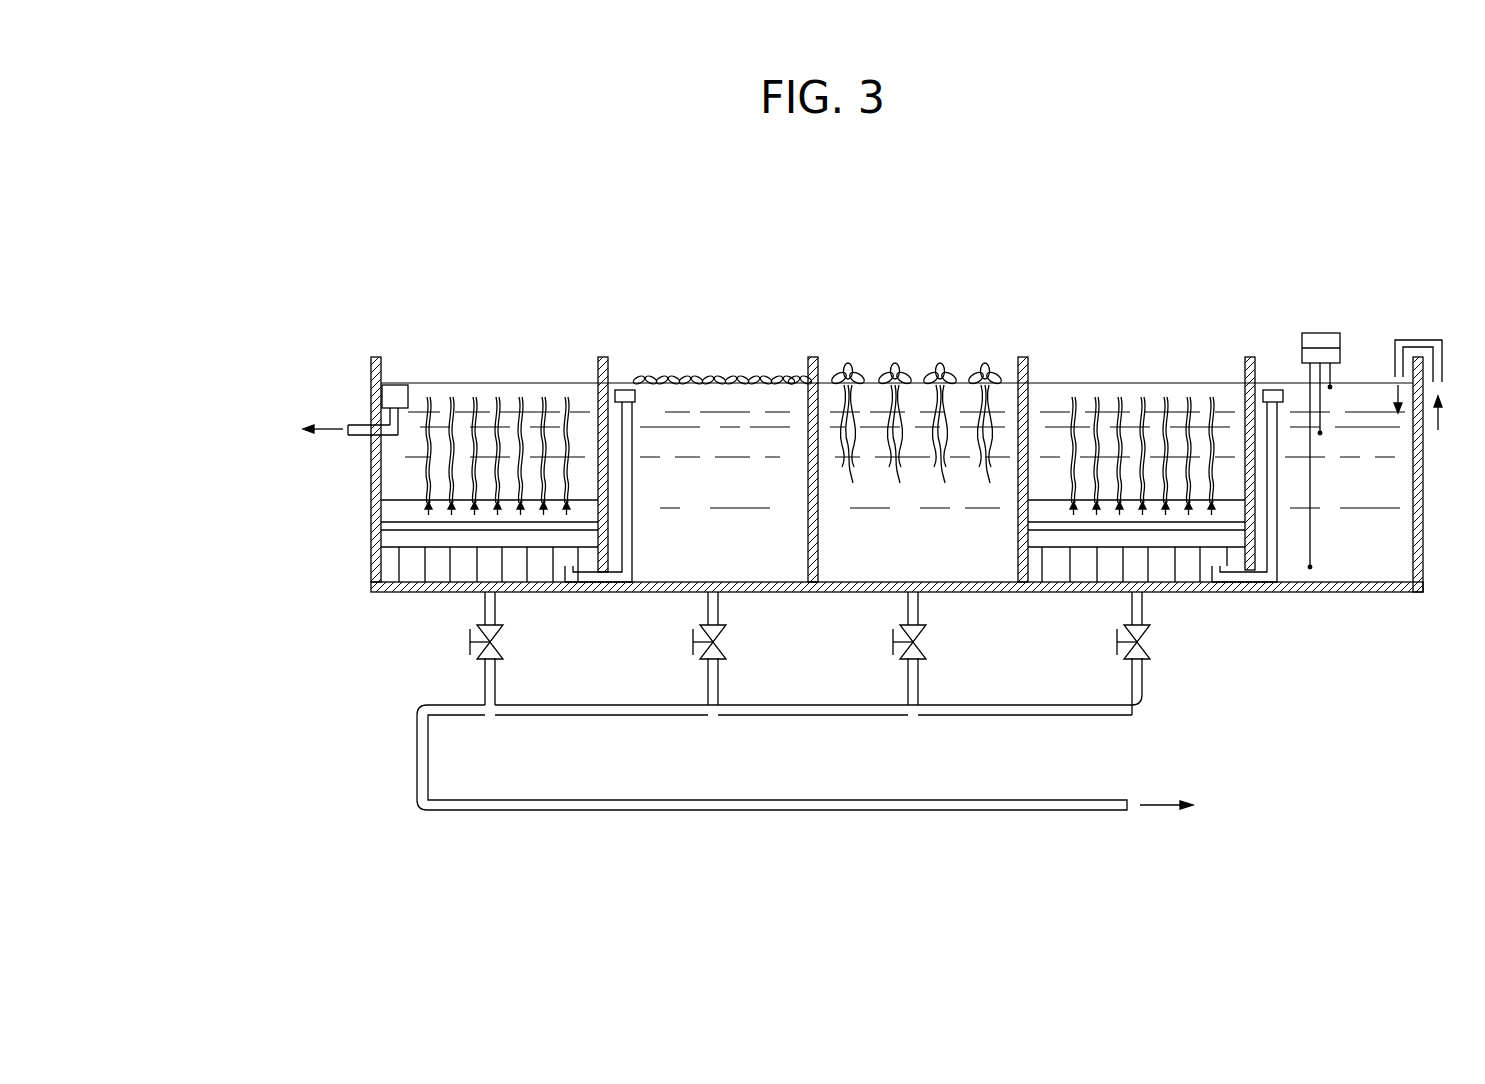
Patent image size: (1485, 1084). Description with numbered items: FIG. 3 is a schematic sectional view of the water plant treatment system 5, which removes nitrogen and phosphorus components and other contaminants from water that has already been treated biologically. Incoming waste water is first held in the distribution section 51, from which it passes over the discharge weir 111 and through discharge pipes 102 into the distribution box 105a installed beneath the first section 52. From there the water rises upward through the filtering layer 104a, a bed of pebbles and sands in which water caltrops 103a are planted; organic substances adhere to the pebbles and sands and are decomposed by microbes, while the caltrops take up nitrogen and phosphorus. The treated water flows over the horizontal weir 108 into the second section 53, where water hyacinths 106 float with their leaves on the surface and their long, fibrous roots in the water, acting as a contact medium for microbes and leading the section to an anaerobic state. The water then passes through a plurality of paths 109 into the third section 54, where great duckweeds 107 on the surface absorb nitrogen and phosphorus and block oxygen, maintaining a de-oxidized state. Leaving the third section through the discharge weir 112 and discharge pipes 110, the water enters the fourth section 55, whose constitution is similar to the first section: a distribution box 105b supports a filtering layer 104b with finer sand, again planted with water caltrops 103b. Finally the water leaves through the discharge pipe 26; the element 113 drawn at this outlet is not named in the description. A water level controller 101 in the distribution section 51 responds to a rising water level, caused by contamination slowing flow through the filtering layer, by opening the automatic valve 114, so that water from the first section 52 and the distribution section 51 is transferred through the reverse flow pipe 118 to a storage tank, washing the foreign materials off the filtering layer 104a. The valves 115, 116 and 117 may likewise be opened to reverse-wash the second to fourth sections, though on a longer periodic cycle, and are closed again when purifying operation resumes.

The water plant treatment system 5 is at (998, 272).
The discharge pipe 26 is at (358, 423).
The distribution section 51 is at (1368, 395).
The first section 52 is at (1107, 400).
The second section 53 is at (870, 393).
The third section 54 is at (716, 395).
The fourth section 55 is at (463, 400).
The water level controller 101 is at (1320, 333).
The discharge pipes 102 is at (1273, 480).
The water caltrops 103a is at (1163, 400).
The water caltrops 103b is at (523, 415).
The filtering layer 104a is at (1207, 520).
The filtering layer 104b is at (395, 517).
The distribution box layer 105a is at (1157, 570).
The distribution box 105b is at (417, 573).
The water hyacinths 106 is at (947, 395).
The great duckweeds 107 is at (752, 375).
The horizontal weir 108 is at (1030, 392).
The paths 109 is at (817, 577).
The discharge pipes 110 is at (630, 473).
The discharge weir 111 is at (1277, 388).
The discharge weir 112 is at (628, 388).
The pump 113 is at (397, 385).
The automatic valve 114 is at (1147, 657).
The valve 115 is at (926, 642).
The valve 116 is at (726, 642).
The valve 117 is at (503, 642).
The reverse flow pipe 118 is at (832, 800).